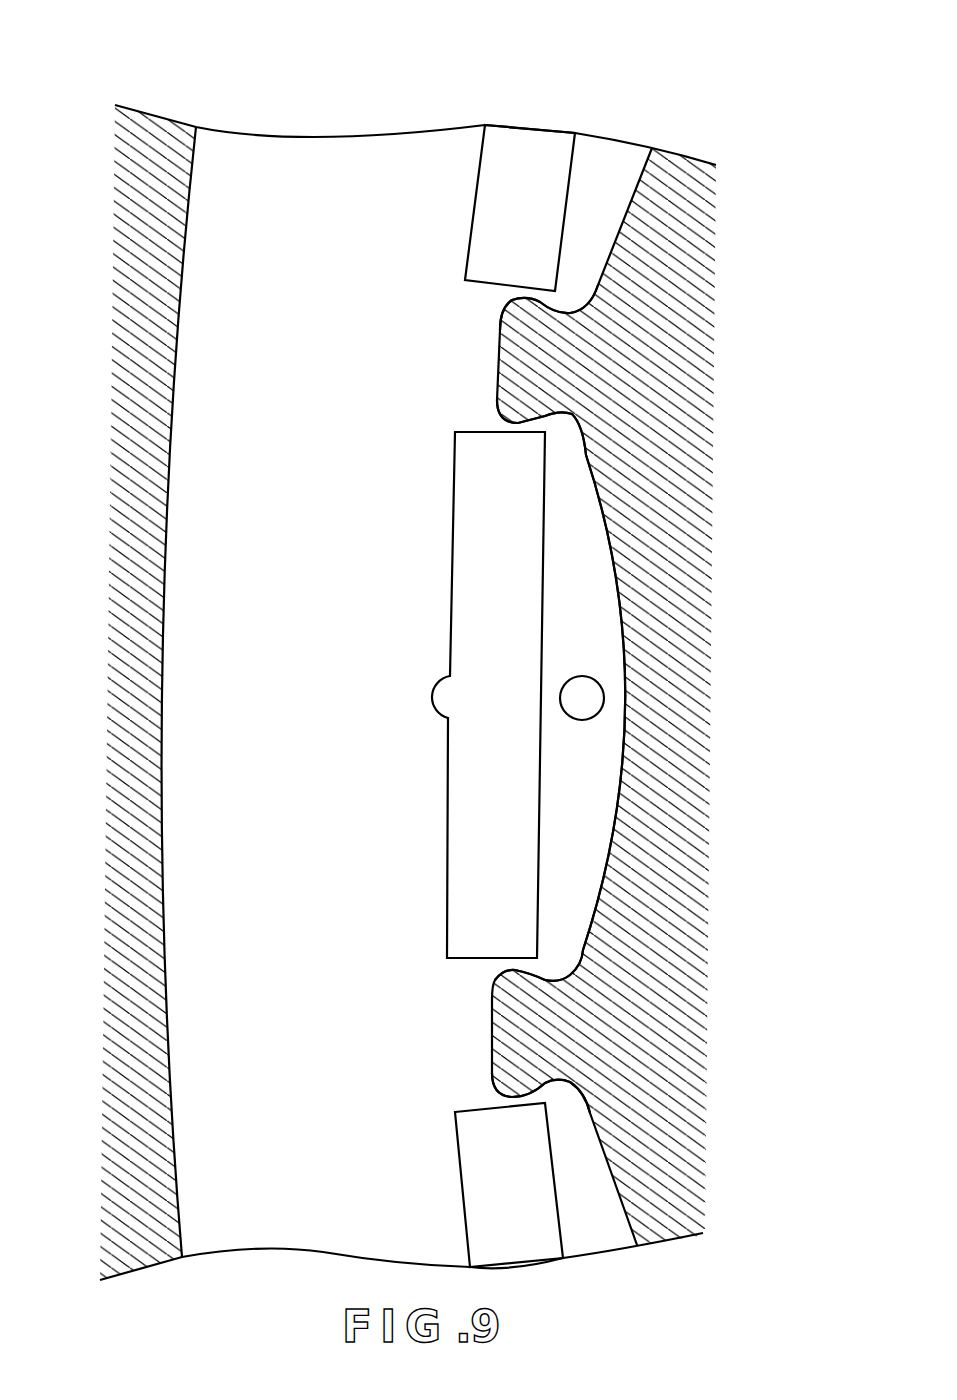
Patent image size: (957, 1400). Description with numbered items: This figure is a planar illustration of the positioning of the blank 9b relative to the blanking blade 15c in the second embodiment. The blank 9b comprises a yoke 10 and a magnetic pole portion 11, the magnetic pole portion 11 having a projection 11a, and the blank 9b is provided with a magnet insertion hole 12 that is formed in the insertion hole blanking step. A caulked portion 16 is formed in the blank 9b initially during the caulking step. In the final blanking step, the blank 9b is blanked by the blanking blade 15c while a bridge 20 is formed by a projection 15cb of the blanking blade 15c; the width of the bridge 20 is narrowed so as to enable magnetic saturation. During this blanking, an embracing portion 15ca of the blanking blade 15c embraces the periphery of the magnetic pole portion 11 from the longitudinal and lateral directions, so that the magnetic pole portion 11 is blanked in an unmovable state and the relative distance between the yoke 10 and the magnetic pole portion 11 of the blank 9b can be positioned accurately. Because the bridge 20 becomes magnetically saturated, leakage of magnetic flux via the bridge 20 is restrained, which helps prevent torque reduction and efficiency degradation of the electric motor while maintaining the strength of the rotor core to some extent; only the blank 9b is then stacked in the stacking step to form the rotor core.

The blank 9b is at (418, 122).
The yoke 10 is at (238, 673).
The magnetic pole portion 11 is at (583, 565).
The projection 11a is at (557, 425).
The magnet insertion hole 12 is at (565, 228).
The blanking blade 15c is at (685, 640).
The embracing portion 15ca is at (553, 317).
The projection 15cb is at (528, 300).
The caulked portion 16 is at (593, 700).
The bridge 20 is at (518, 428).